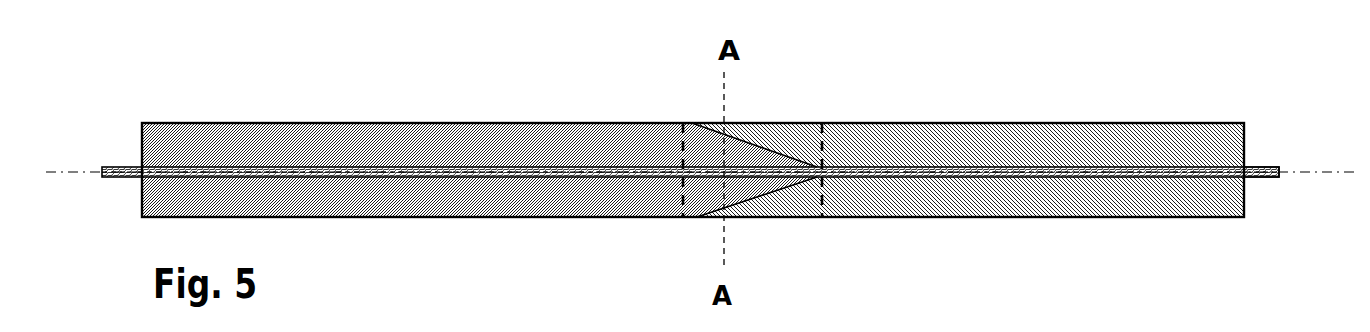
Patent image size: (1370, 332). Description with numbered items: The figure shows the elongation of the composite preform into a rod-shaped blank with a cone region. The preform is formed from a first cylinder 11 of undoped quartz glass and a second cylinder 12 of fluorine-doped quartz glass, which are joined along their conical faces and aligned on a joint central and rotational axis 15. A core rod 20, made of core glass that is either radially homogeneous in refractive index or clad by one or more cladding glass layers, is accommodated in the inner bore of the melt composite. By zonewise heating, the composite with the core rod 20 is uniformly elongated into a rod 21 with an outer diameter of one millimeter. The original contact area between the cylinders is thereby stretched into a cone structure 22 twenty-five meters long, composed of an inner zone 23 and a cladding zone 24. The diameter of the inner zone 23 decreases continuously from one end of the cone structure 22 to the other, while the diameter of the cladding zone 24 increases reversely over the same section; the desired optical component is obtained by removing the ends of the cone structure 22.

The first cylinder 11 is at (452, 147).
The second cylinder 12 is at (1095, 150).
The joint central and rotational axis 15 is at (1290, 167).
The core rod 20 is at (1265, 174).
The rod 21 is at (936, 106).
The cone structure 22 is at (754, 235).
The inner zone 23 is at (753, 152).
The cladding zone 24 is at (793, 207).